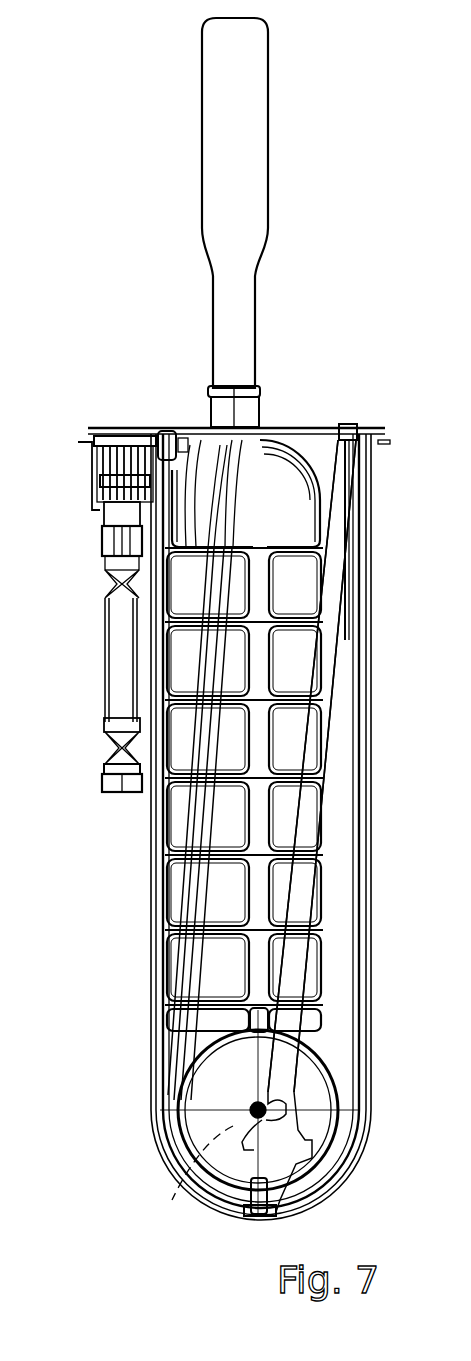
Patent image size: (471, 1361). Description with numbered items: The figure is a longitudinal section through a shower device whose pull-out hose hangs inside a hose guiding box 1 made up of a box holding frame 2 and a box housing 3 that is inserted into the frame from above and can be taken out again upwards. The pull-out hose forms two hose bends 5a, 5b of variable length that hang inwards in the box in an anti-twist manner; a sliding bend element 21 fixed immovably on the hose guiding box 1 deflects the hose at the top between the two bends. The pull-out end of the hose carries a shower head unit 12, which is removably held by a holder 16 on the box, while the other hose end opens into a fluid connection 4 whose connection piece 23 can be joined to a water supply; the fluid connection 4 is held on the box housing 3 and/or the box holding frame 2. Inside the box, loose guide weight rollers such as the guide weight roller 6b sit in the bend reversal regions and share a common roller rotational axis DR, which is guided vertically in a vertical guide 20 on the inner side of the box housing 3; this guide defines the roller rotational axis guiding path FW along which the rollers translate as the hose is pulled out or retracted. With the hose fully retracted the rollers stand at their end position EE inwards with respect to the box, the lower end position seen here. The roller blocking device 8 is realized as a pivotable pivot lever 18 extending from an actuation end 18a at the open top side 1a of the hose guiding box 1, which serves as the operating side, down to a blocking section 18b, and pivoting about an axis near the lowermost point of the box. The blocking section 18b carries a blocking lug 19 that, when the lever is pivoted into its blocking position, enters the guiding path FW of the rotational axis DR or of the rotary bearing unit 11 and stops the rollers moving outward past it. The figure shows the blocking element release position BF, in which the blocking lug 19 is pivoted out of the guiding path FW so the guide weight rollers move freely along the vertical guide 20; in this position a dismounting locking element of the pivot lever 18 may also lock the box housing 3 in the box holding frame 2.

The shower head unit 12 is at (262, 190).
The holder 16 is at (247, 412).
The hose guiding box 1 is at (372, 586).
The open top side 1a is at (168, 428).
The box housing 3 is at (373, 690).
The box holding frame 2 is at (88, 487).
The fluid connection 4 is at (100, 527).
The connection piece 23 is at (103, 746).
The sliding bend element 21 is at (243, 470).
The vertical guide 20 is at (262, 812).
The hose bend 5a is at (185, 843).
The hose bend 5b is at (193, 888).
The roller blocking device 8 is at (307, 878).
The pivot lever 18 is at (312, 766).
The actuation end 18a is at (352, 426).
The blocking section 18b is at (290, 1088).
The blocking lug 19 is at (167, 1081).
The guide weight roller 6b is at (200, 1128).
The rotary bearing unit 11 is at (253, 1118).
The blocking element release position BF is at (315, 953).
The roller rotational axis guiding path FW is at (262, 980).
The end position inwards with respect to the box EE is at (368, 1145).
The roller rotational axis DR is at (186, 1187).